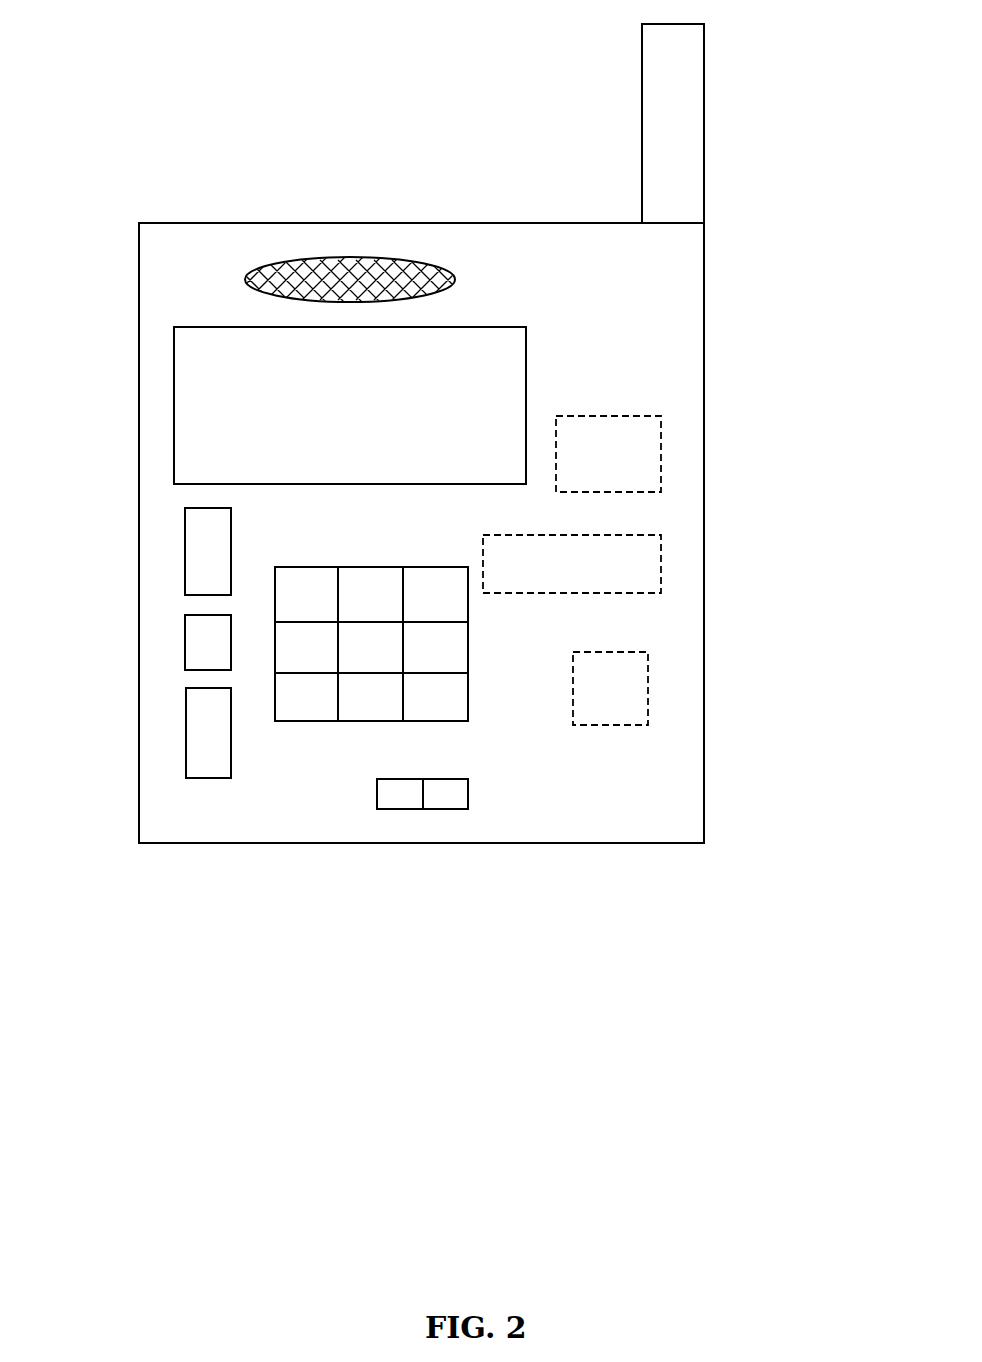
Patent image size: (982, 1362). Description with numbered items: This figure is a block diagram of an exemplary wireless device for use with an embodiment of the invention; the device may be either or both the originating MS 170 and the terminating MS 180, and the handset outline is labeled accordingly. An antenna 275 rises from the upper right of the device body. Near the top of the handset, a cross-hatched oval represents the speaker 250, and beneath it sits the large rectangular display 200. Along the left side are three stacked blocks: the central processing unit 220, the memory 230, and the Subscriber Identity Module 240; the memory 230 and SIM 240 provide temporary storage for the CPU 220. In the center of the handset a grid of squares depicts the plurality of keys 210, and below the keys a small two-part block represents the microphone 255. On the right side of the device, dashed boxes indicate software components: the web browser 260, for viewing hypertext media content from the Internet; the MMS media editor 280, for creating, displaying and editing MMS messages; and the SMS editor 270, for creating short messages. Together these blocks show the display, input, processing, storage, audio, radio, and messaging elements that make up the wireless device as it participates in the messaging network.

The originating MS 170 is at (398, 498).
The terminating MS 180 is at (235, 214).
The antenna 275 is at (642, 88).
The speaker 250 is at (345, 256).
The display 200 is at (174, 410).
The central processing unit 220 is at (185, 553).
The memory 230 is at (185, 645).
The Subscriber Identity Module 240 is at (186, 725).
The plurality of keys 210 is at (366, 553).
The microphone 255 is at (437, 815).
The web browser 260 is at (665, 442).
The media editor 280 is at (665, 563).
The SMS editor 270 is at (653, 685).